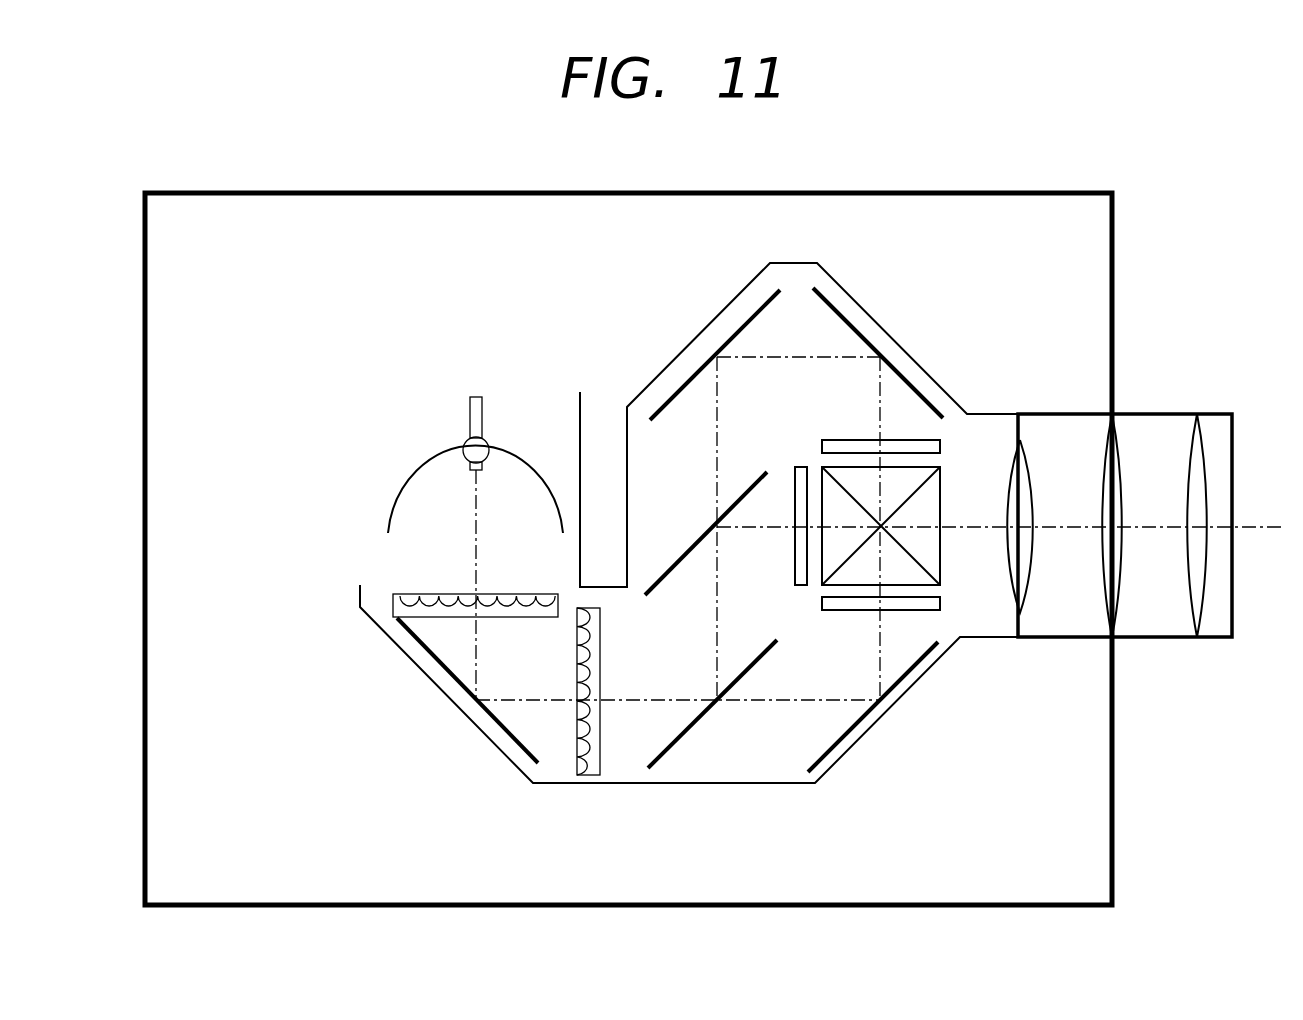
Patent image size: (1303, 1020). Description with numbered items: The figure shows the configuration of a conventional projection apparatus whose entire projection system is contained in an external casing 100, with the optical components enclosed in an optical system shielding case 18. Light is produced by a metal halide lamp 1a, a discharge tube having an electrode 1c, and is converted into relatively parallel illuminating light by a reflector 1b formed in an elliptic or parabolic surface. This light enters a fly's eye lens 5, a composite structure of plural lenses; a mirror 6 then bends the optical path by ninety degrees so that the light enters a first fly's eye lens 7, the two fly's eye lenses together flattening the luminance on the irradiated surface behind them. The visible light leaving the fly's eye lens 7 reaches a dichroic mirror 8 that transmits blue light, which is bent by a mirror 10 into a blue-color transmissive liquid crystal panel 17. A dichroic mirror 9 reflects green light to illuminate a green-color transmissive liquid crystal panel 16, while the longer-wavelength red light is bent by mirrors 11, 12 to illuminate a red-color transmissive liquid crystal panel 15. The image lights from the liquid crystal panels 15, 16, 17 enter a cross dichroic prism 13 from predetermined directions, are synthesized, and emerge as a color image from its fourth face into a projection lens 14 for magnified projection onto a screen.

The external casing 100 is at (1115, 240).
The optical system shielding case 18 is at (793, 262).
The metal halide lamp 1a is at (463, 452).
The reflector 1b is at (388, 512).
The electrode 1c is at (472, 408).
The fly's eye lens 5 is at (422, 620).
The mirror 6 is at (442, 670).
The first fly's eye lens 7 is at (588, 740).
The dichroic mirror 8 is at (673, 747).
The dichroic mirror 9 is at (692, 547).
The mirror 10 is at (855, 732).
The mirror 11 is at (748, 317).
The mirror 12 is at (867, 337).
The cross dichroic prism 13 is at (943, 492).
The projection lens 14 is at (1075, 413).
The red-color transmissive liquid crystal panel 15 is at (903, 438).
The green-color transmissive liquid crystal panel 16 is at (803, 467).
The blue-color transmissive liquid crystal panel 17 is at (942, 603).